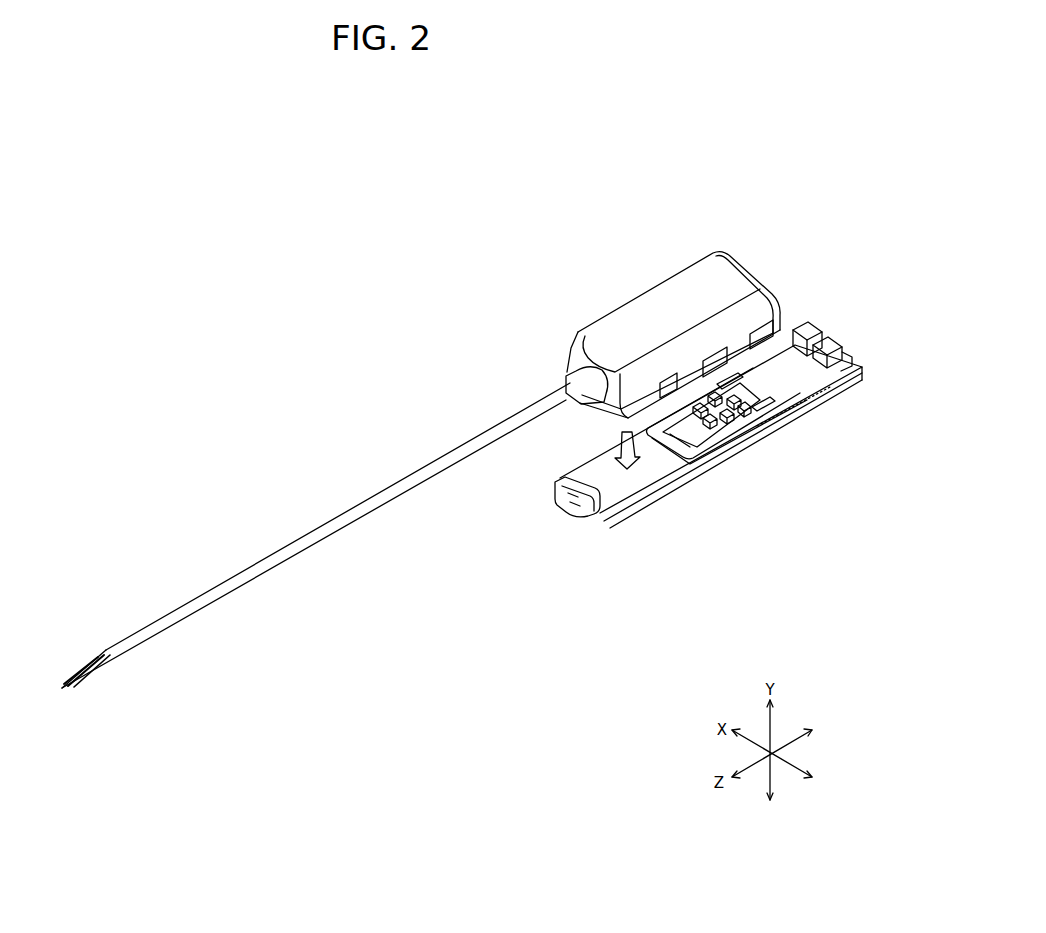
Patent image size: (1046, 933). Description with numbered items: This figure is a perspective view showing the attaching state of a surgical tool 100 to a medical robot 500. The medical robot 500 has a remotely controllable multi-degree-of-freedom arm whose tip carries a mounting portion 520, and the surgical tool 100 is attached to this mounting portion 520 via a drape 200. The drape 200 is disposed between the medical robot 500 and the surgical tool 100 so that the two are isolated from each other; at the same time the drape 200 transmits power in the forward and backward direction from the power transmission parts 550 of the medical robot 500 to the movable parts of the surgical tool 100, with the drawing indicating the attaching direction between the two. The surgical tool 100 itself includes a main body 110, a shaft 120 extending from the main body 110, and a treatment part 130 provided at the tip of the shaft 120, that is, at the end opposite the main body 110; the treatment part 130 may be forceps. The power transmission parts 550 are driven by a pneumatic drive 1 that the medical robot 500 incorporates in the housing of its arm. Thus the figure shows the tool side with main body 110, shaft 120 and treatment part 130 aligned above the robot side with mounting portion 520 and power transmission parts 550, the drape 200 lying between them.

The pneumatic drive 1 is at (827, 296).
The surgical tool 100 is at (665, 242).
The main body 110 is at (620, 303).
The shaft 120 is at (365, 508).
The treatment part 130 is at (90, 666).
The drape 200 is at (582, 427).
The medical robot 500 is at (758, 206).
The mounting portion 520 is at (632, 481).
The power transmission parts 550 is at (690, 420).